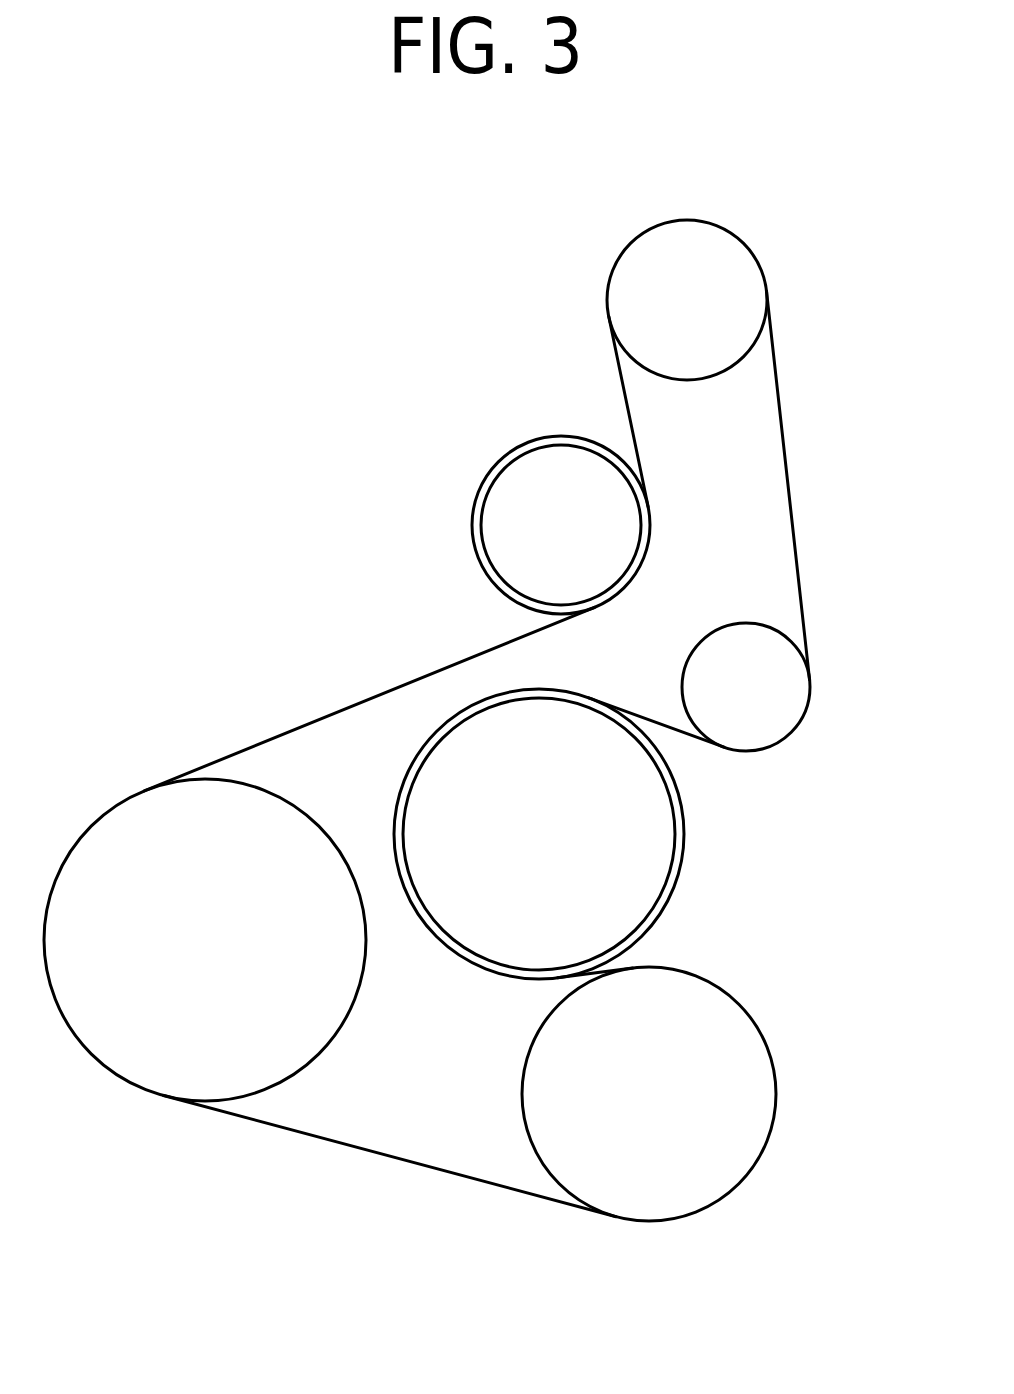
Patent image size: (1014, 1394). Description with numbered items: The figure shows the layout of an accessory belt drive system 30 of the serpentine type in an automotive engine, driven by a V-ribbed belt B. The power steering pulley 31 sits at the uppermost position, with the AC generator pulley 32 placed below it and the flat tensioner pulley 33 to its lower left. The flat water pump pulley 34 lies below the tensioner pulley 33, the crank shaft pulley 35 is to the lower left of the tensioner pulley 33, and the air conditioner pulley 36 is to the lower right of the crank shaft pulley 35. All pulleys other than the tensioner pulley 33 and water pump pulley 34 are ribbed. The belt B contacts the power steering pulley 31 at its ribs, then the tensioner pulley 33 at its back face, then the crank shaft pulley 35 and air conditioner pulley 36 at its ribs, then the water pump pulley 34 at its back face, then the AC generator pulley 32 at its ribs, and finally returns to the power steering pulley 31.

The accessory belt drive system 30 is at (318, 272).
The V-ribbed belt B is at (370, 700).
The power steering pulley 31 is at (728, 255).
The AC generator pulley 32 is at (766, 715).
The tensioner pulley 33 is at (523, 480).
The water pump pulley 34 is at (640, 832).
The crank shaft pulley 35 is at (123, 1062).
The air conditioner pulley 36 is at (743, 1113).